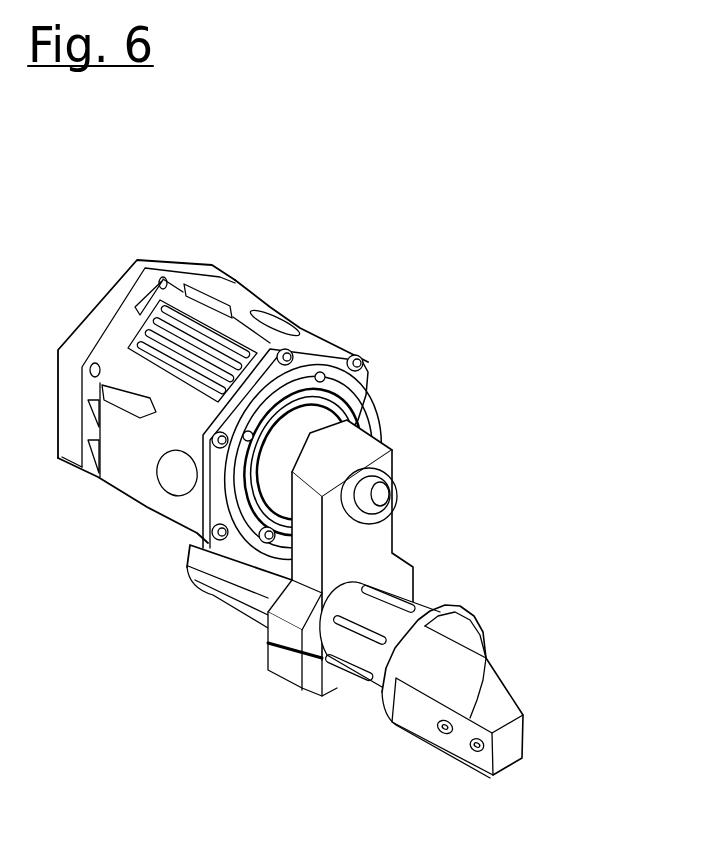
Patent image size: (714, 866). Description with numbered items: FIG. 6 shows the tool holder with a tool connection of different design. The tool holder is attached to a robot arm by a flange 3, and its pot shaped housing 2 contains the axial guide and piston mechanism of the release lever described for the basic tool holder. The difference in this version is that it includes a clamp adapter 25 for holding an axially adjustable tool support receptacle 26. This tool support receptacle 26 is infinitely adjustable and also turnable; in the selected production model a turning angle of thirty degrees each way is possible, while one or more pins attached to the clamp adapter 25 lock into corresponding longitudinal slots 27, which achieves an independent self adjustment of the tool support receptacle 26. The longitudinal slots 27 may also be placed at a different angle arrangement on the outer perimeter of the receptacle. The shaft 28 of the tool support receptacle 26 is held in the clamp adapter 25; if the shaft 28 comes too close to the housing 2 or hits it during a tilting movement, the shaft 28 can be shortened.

The housing 2 is at (347, 280).
The flange 3 is at (172, 252).
The clamp adapter 25 is at (367, 552).
The tool support receptacle 26 is at (500, 700).
The longitudinal slot 27 is at (318, 685).
The shaft 28 is at (238, 580).